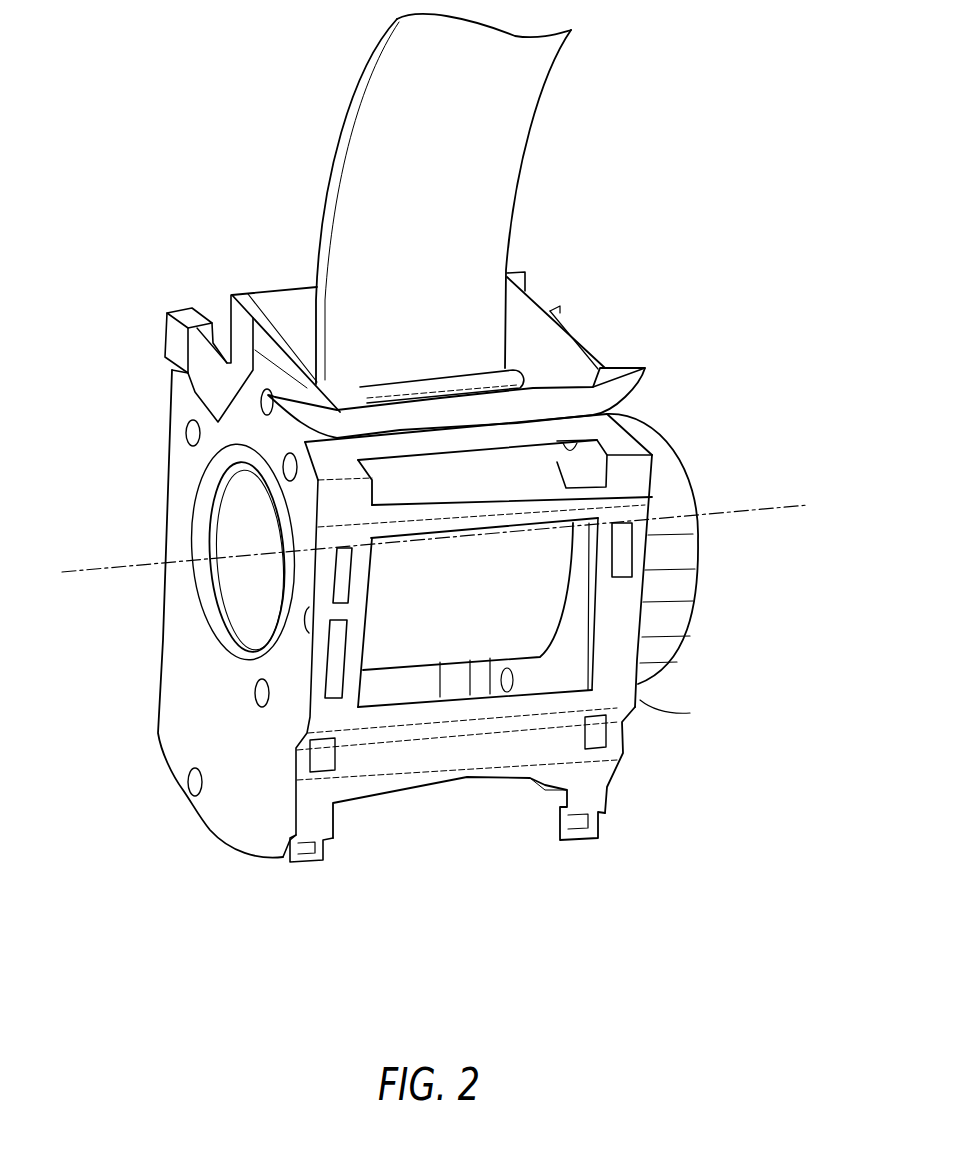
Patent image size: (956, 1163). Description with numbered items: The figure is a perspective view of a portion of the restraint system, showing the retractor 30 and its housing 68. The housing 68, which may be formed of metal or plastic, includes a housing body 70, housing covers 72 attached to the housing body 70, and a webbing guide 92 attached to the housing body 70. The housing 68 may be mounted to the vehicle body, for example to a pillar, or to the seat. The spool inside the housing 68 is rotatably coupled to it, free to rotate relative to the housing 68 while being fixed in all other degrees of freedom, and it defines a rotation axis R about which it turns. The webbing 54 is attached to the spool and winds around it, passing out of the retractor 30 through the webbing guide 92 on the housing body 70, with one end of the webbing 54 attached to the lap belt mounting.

The retractor 30 is at (147, 95).
The webbing 54 is at (534, 113).
The housing 68 is at (167, 445).
The housing body 70 is at (171, 398).
The housing covers 72 is at (648, 683).
The webbing guide 92 is at (532, 298).
The rotation axis R is at (740, 514).